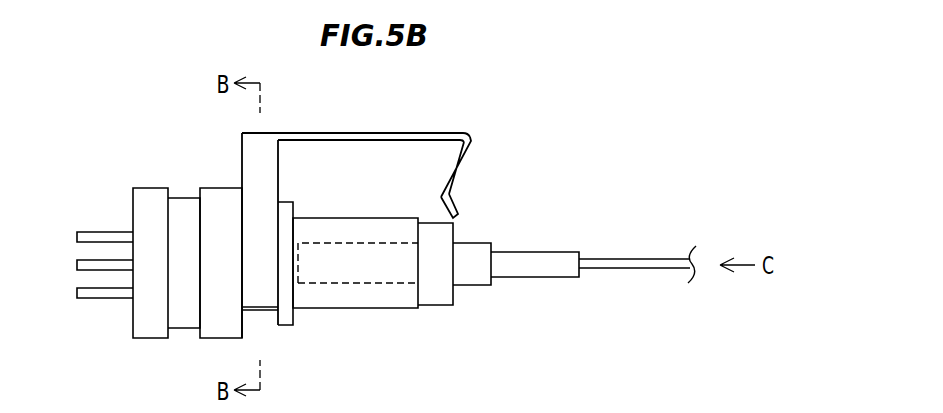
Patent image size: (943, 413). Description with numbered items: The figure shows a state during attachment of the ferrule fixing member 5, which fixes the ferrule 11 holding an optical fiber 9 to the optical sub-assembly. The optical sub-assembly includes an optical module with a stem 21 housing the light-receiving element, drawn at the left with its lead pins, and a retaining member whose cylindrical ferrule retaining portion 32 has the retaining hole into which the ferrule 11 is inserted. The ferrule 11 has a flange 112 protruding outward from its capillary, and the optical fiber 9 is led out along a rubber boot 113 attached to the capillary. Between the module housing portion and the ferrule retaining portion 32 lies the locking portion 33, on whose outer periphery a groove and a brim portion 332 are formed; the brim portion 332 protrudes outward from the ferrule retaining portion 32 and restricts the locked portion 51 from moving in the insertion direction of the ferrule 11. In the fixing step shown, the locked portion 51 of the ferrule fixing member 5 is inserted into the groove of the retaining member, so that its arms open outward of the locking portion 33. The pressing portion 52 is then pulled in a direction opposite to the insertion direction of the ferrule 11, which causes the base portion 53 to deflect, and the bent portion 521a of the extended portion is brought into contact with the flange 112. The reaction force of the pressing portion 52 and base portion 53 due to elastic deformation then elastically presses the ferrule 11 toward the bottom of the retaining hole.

The ferrule fixing member 5 is at (392, 140).
The optical fiber 9 is at (648, 263).
The ferrule 11 is at (501, 269).
The stem 21 is at (126, 338).
The ferrule retaining portion 32 is at (379, 327).
The locking portion 33 is at (293, 298).
The locked portion 51 is at (250, 158).
The pressing portion 52 is at (465, 160).
The base portion 53 is at (330, 132).
The flange 112 is at (435, 298).
The rubber boot 113 is at (530, 267).
The brim portion 332 is at (287, 322).
The bent portion 521a is at (453, 193).